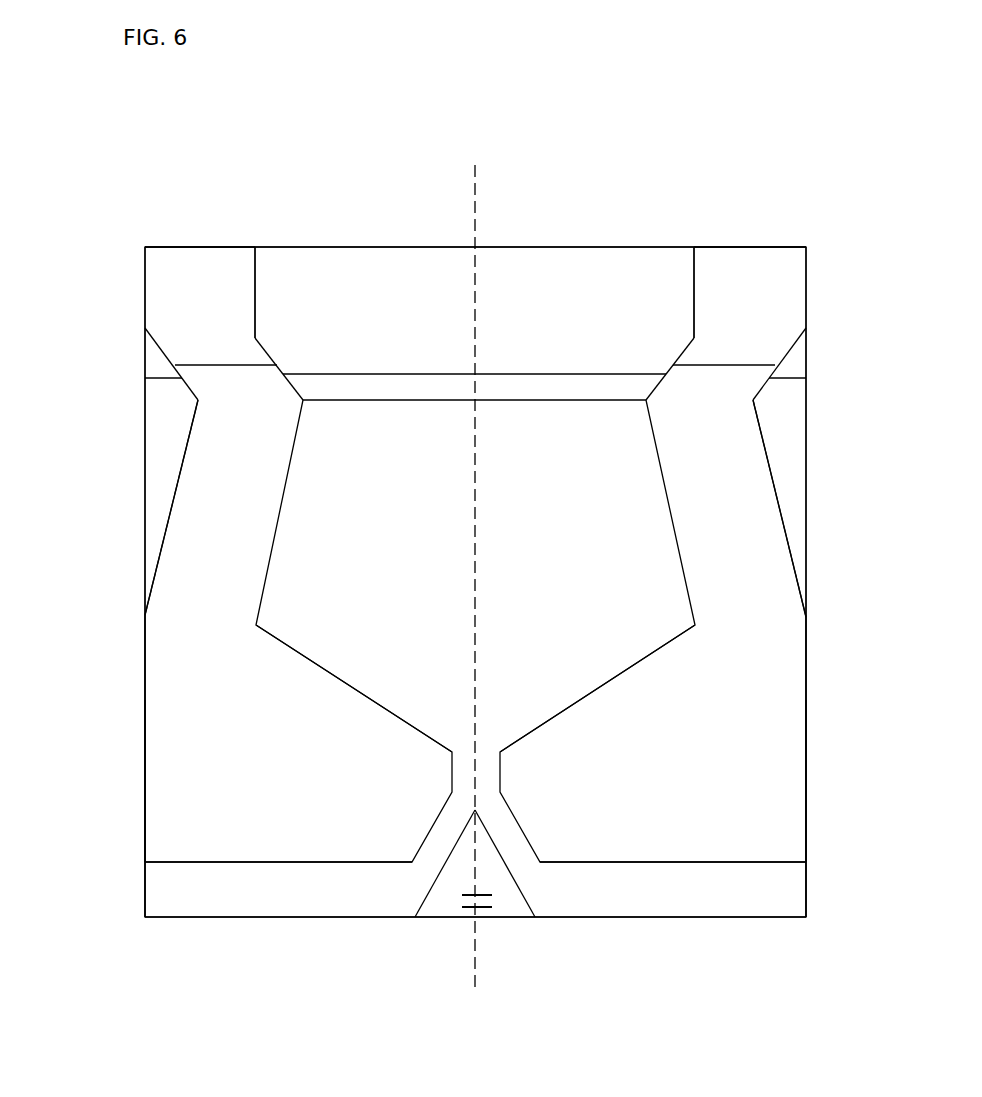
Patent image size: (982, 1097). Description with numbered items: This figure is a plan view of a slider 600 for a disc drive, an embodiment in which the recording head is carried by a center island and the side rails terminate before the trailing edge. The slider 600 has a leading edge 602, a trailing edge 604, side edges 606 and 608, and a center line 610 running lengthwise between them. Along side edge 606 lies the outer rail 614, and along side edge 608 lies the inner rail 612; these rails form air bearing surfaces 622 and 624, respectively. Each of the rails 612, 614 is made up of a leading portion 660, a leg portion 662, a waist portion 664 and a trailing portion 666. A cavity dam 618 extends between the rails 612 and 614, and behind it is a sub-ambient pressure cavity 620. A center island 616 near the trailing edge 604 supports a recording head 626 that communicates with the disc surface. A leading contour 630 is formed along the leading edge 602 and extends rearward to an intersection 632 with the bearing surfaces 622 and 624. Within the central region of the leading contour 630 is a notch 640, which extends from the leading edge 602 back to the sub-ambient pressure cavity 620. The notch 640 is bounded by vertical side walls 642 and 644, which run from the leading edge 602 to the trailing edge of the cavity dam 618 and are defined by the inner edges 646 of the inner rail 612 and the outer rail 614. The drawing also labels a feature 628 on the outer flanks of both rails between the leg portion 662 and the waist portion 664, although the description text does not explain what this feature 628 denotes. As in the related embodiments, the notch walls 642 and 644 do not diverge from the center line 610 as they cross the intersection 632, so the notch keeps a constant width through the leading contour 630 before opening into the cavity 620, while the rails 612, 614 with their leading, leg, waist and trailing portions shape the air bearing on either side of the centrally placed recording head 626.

The slider 600 is at (197, 215).
The leading edge 602 is at (381, 247).
The trailing edge 604 is at (282, 917).
The side edge 606 is at (812, 495).
The side edge 608 is at (145, 495).
The center line 610 is at (472, 208).
The inner rail 612 is at (807, 828).
The outer rail 614 is at (146, 828).
The center island 616 is at (452, 889).
The cavity dam 618 is at (378, 402).
The sub-ambient pressure cavity 620 is at (522, 565).
The air bearing surface 622 is at (737, 708).
The air bearing surface 624 is at (195, 710).
The recording head 626 is at (480, 907).
The sloped region 628 is at (145, 566).
The leading contour 630 is at (183, 272).
The intersection 632 is at (205, 365).
The notch 640 is at (514, 272).
The vertical side wall 642 is at (694, 297).
The vertical side wall 644 is at (257, 306).
The inner edge 646 is at (337, 677).
The leading portion 660 is at (222, 378).
The leg portion 662 is at (230, 460).
The waist portion 664 is at (177, 650).
The trailing portion 666 is at (192, 771).